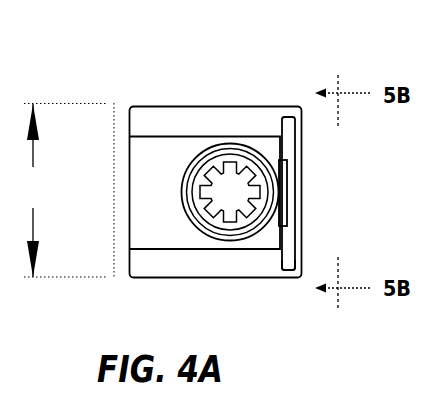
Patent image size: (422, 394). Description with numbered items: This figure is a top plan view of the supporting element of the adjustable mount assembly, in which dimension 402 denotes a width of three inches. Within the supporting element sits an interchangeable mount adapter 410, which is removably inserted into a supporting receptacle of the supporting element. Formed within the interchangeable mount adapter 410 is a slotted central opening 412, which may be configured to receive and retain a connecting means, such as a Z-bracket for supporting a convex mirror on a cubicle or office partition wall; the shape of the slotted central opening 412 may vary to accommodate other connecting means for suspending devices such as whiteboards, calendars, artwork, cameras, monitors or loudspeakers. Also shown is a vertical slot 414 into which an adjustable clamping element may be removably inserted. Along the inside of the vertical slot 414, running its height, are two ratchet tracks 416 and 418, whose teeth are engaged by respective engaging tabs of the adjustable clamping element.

The dimension 402 is at (63, 190).
The interchangeable mount adapter 410 is at (187, 168).
The slotted central opening 412 is at (231, 181).
The vertical slot 414 is at (274, 254).
The ratchet track 416 is at (289, 117).
The ratchet track 418 is at (291, 272).